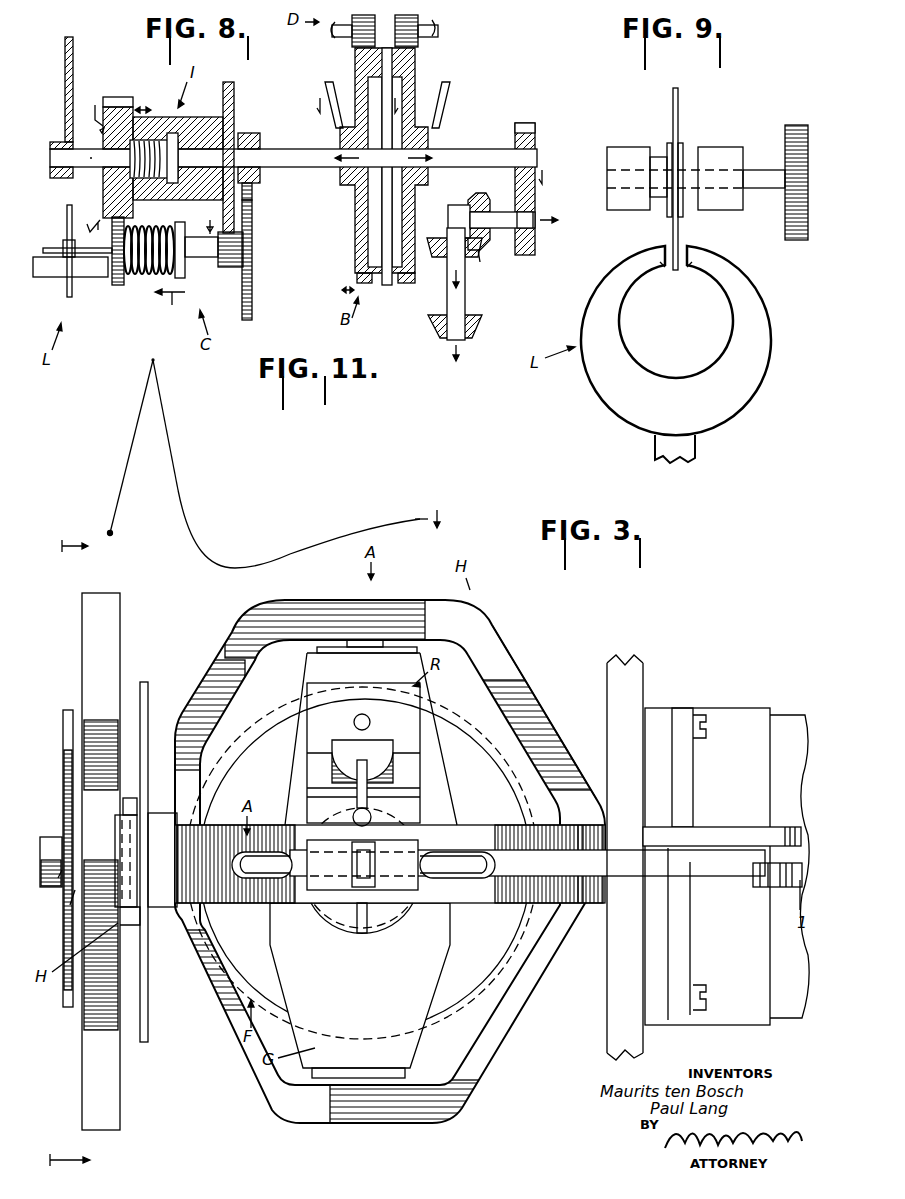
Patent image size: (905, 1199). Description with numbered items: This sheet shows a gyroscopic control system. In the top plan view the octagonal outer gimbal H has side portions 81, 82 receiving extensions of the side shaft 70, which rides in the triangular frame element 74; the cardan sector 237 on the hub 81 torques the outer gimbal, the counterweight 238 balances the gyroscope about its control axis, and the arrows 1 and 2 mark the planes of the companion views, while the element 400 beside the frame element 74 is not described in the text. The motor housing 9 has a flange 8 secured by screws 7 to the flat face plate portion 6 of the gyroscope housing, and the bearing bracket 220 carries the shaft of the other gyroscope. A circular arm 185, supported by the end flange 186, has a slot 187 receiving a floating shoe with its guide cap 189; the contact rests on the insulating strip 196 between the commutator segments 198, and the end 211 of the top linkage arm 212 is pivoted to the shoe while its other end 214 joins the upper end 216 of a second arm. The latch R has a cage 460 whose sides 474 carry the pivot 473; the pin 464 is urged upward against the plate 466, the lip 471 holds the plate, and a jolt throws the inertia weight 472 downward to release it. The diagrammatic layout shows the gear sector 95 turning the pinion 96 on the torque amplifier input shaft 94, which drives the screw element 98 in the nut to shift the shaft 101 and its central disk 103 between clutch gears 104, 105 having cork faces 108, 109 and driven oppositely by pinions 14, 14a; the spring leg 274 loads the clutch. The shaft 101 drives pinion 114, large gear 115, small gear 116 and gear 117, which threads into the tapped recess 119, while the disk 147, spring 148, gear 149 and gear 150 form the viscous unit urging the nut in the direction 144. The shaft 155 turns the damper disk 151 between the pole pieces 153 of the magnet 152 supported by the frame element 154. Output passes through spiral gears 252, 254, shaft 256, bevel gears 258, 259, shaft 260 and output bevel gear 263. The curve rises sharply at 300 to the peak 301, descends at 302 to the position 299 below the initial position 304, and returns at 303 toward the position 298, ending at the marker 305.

In FIG. 8, the gear sector 95 is at (74, 54).
In FIG. 3, the gear sector 95 is at (68, 710).
In FIG. 8, the gear 150 is at (118, 97).
In FIG. 8, the screw element 98 is at (150, 117).
In FIG. 8, the tapped recess 119 is at (178, 117).
In FIG. 8, the gear 117 is at (234, 95).
In FIG. 8, the pinion 114 is at (250, 133).
In FIG. 8, the pinion 14 is at (348, 48).
In FIG. 8, the pinion 14a is at (420, 46).
In FIG. 8, the end leg of leaf spring 274 is at (334, 106).
In FIG. 8, the spiral pinion 252 is at (522, 123).
In FIG. 8, the shaft 101 is at (300, 167).
In FIG. 8, the central disk 103 is at (382, 200).
In FIG. 8, the cork clutch face 108 is at (356, 252).
In FIG. 8, the clutch gear 104 is at (357, 280).
In FIG. 8, the clutch gear 105 is at (405, 283).
In FIG. 8, the cork clutch face 109 is at (446, 226).
In FIG. 8, the bevel gear 258 is at (470, 203).
In FIG. 8, the bevel gear 259 is at (483, 269).
In FIG. 8, the shaft 260 is at (465, 303).
In FIG. 8, the bevel gear 263 is at (480, 330).
In FIG. 8, the spiral gear 254 is at (536, 243).
In FIG. 8, the shaft extension 256 is at (502, 228).
In FIG. 8, the pinion 96 is at (60, 178).
In FIG. 8, the torque amplifier input shaft 94 is at (91, 167).
In FIG. 8, the rotatable disk 151 is at (67, 213).
In FIG. 9, the rotatable disk 151 is at (679, 98).
In FIG. 8, the shaft extension 155 is at (62, 246).
In FIG. 9, the shaft extension 155 is at (765, 170).
In FIG. 8, the magnet 152 is at (50, 277).
In FIG. 9, the magnet 152 is at (755, 305).
In FIG. 8, the gear 149 is at (115, 285).
In FIG. 9, the gear 149 is at (797, 240).
In FIG. 8, the spring 148 is at (143, 275).
In FIG. 8, the disk 147 is at (185, 260).
In FIG. 8, the direction of nut movement 144 is at (172, 305).
In FIG. 8, the small gear 116 is at (228, 267).
In FIG. 8, the large gear 115 is at (252, 298).
In FIG. 9, the frame element 154 is at (622, 147).
In FIG. 9, the pole pieces 153 is at (688, 268).
In FIG. 11, the peak 301 is at (150, 360).
In FIG. 11, the sudden rise 300 is at (128, 432).
In FIG. 11, the downward portion 302 is at (170, 428).
In FIG. 11, the initial position 304 is at (113, 533).
In FIG. 11, the low position 299 is at (220, 563).
In FIG. 11, the return portion 303 is at (297, 550).
In FIG. 11, the ascended position 298 is at (408, 518).
In FIG. 11, the end point 305 is at (442, 520).
In FIG. 11, the section line 2 is at (65, 544).
In FIG. 3, the section line 2 is at (61, 1159).
In FIG. 3, the frame element 74 is at (120, 602).
In FIG. 3, the side portion of outer gimbal 81 is at (182, 742).
In FIG. 3, the counterweight 238 is at (165, 826).
In FIG. 3, the block 400 is at (50, 837).
In FIG. 3, the frame 1 is at (58, 878).
In FIG. 3, the side shaft 70 is at (66, 905).
In FIG. 3, the cardan sector 237 is at (143, 1042).
In FIG. 3, the cage 460 is at (335, 683).
In FIG. 3, the pin 464 is at (356, 722).
In FIG. 3, the lip 471 is at (368, 758).
In FIG. 3, the plate 466 is at (408, 750).
In FIG. 3, the sides of cage 474 is at (307, 782).
In FIG. 3, the latch pivot 473 is at (352, 800).
In FIG. 3, the inertia weight 472 is at (370, 820).
In FIG. 3, the slot 187 is at (466, 848).
In FIG. 3, the side portion of outer gimbal 82 is at (562, 742).
In FIG. 3, the flat face plate portion 6 is at (624, 668).
In FIG. 3, the flange 8 is at (684, 720).
In FIG. 3, the motor housing 9 is at (748, 715).
In FIG. 3, the screws 7 is at (708, 738).
In FIG. 3, the bearing bracket 220 is at (728, 834).
In FIG. 3, the end of top linkage arm 211 is at (352, 866).
In FIG. 3, the other end of linkage arm 214 is at (753, 880).
In FIG. 3, the upper end of arm 216 is at (772, 888).
In FIG. 3, the guide cap 189 is at (342, 890).
In FIG. 3, the insulating strip 196 is at (364, 928).
In FIG. 3, the commutator segments 198 is at (388, 914).
In FIG. 3, the circular arm 185 is at (484, 903).
In FIG. 3, the top linkage arm 212 is at (582, 903).
In FIG. 3, the end flange 186 is at (600, 962).